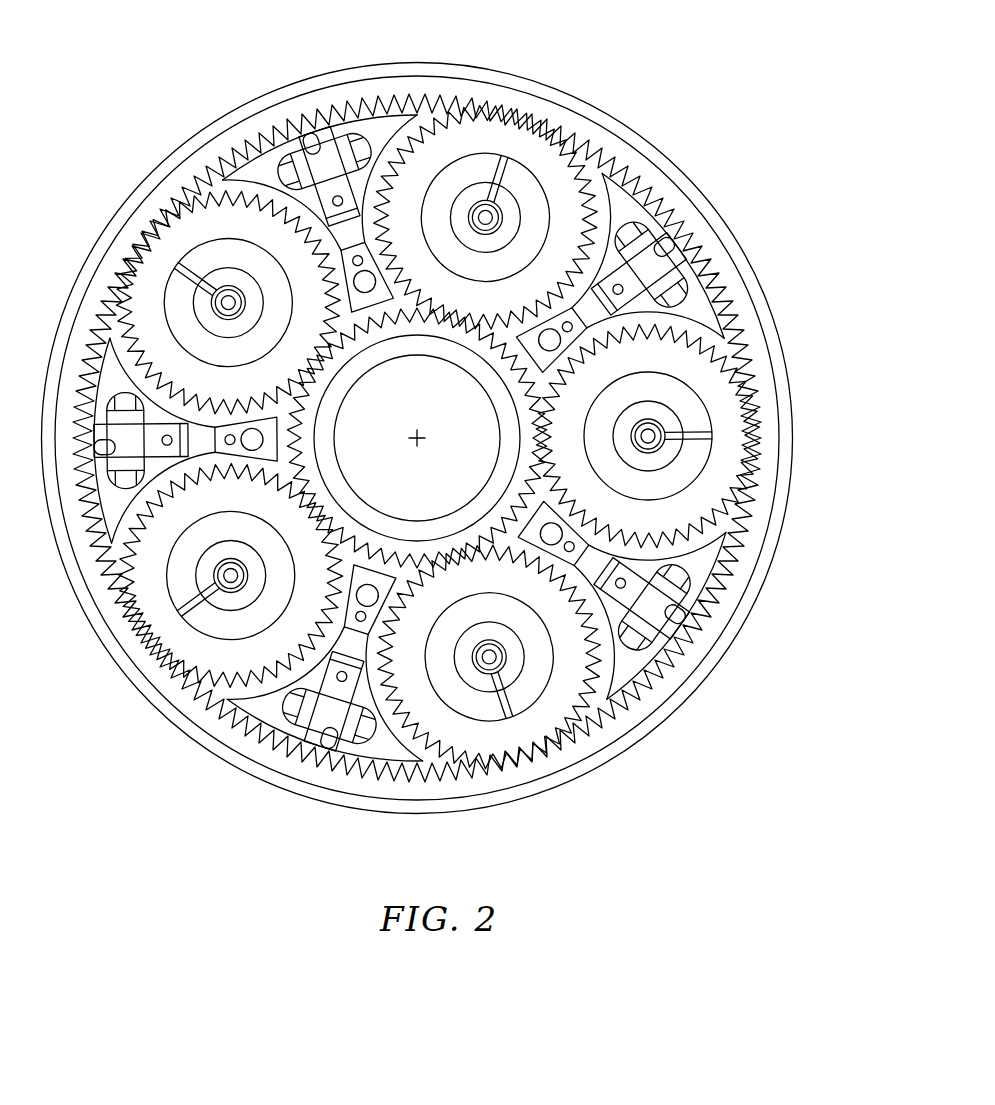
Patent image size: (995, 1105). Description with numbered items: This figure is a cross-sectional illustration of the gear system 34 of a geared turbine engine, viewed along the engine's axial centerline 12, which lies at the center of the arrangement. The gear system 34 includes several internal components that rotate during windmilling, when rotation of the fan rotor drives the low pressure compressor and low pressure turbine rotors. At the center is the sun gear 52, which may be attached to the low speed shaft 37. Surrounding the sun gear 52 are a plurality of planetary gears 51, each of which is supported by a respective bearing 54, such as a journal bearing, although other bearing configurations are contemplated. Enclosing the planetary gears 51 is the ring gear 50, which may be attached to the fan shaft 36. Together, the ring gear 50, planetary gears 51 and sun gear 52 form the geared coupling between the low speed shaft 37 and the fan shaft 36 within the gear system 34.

The gear system 34 is at (692, 73).
The fan shaft 36 is at (737, 250).
The ring gear 50 is at (776, 360).
The planetary gears 51 is at (537, 163).
The bearing 54 is at (540, 208).
The sun gear 52 is at (333, 500).
The low speed shaft 37 is at (487, 494).
The axial centerline 12 is at (422, 436).